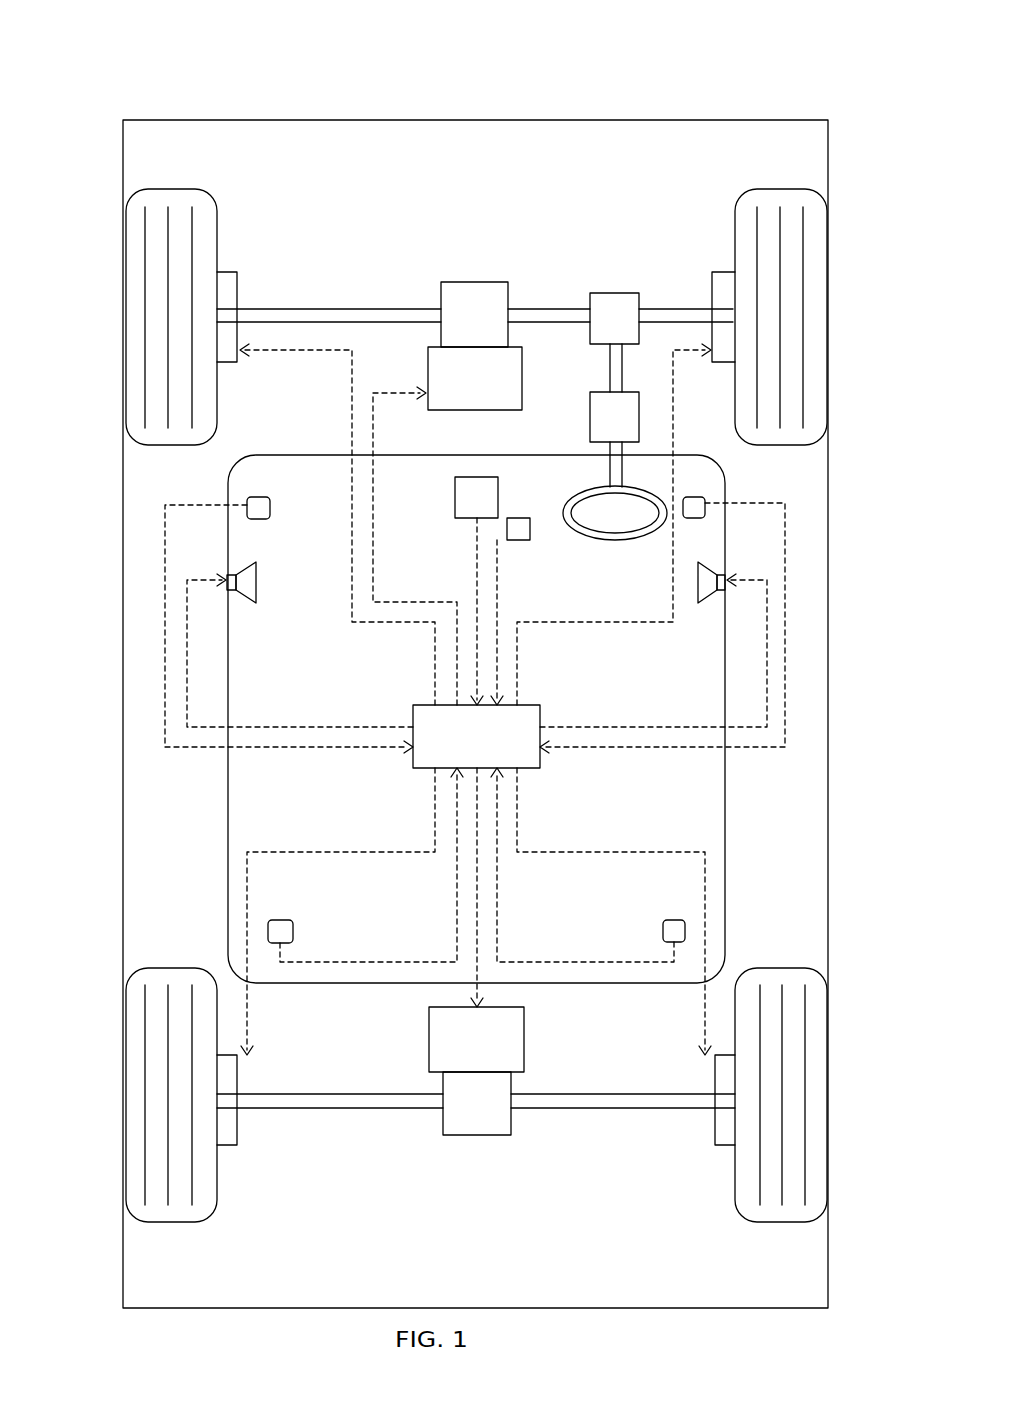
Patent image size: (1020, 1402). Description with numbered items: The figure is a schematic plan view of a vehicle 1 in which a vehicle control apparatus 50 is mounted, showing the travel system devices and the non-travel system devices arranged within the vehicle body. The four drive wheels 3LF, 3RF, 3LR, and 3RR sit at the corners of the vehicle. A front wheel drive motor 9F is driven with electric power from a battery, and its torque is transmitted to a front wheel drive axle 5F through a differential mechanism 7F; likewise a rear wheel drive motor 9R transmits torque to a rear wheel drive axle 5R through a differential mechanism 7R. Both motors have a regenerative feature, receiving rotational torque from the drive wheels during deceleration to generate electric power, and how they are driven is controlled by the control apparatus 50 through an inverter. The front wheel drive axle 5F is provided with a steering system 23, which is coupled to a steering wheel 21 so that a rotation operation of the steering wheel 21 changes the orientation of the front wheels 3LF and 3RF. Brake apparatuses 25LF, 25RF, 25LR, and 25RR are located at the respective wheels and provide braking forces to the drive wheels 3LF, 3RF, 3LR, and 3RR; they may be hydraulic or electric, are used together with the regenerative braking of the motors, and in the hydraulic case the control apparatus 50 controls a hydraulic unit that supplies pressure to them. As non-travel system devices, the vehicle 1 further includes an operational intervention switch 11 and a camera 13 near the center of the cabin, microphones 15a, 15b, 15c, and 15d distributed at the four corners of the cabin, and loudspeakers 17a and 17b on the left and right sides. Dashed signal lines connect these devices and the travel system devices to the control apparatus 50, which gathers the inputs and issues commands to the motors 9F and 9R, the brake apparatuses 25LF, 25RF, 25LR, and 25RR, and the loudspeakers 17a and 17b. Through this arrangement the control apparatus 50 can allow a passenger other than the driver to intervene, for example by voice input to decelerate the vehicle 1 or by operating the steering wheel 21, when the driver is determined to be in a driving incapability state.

The vehicle 1 is at (836, 108).
The left front drive wheel 3LF is at (126, 348).
The right front drive wheel 3RF is at (827, 346).
The left rear drive wheel 3LR is at (126, 1114).
The right rear drive wheel 3RR is at (827, 1114).
The front wheel drive axle 5F is at (328, 308).
The rear wheel drive axle 5R is at (331, 1113).
The differential mechanism 7F is at (475, 281).
The differential mechanism 7R is at (478, 1139).
The front wheel drive motor 9F is at (522, 370).
The rear wheel drive motor 9R is at (524, 1038).
The operational intervention switch 11 is at (515, 517).
The camera 13 is at (455, 500).
The microphone 15a is at (250, 497).
The microphone 15b is at (700, 497).
The microphone 15c is at (283, 920).
The microphone 15d is at (670, 920).
The loudspeaker 17a is at (246, 603).
The loudspeaker 17b is at (706, 603).
The steering wheel 21 is at (580, 540).
The steering system 23 is at (588, 415).
The brake apparatus 25LF is at (238, 283).
The brake apparatus 25RF is at (710, 283).
The brake apparatus 25LR is at (238, 1140).
The brake apparatus 25RR is at (713, 1140).
The vehicle control apparatus 50 is at (413, 705).